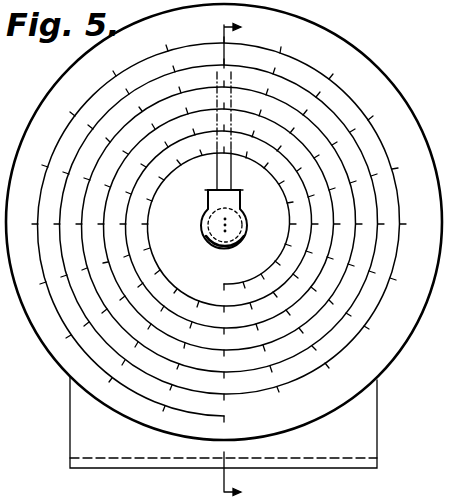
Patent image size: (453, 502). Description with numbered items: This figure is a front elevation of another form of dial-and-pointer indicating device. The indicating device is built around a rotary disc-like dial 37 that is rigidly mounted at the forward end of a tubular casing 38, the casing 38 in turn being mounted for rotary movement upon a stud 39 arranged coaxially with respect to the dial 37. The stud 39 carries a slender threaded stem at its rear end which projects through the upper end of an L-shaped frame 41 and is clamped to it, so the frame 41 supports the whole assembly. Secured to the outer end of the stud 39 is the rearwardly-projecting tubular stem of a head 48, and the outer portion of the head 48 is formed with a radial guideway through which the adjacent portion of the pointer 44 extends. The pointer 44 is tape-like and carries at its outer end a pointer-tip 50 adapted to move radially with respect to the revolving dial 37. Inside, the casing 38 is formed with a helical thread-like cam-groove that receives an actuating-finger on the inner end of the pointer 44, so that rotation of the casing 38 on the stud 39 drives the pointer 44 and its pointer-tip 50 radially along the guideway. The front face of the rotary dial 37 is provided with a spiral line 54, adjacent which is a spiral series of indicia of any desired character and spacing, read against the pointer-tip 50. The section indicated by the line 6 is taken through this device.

The section line 6- 6 is at (245, 258).
The rotary disc-like dial 37 is at (394, 92).
The tubular casing 38 is at (201, 217).
The stud 39 is at (204, 233).
The L-shaped frame 41 is at (70, 421).
The pointer 44 is at (232, 186).
The head 48 is at (228, 241).
The pointer-tip 50 is at (217, 172).
The spiral line 54 is at (384, 121).